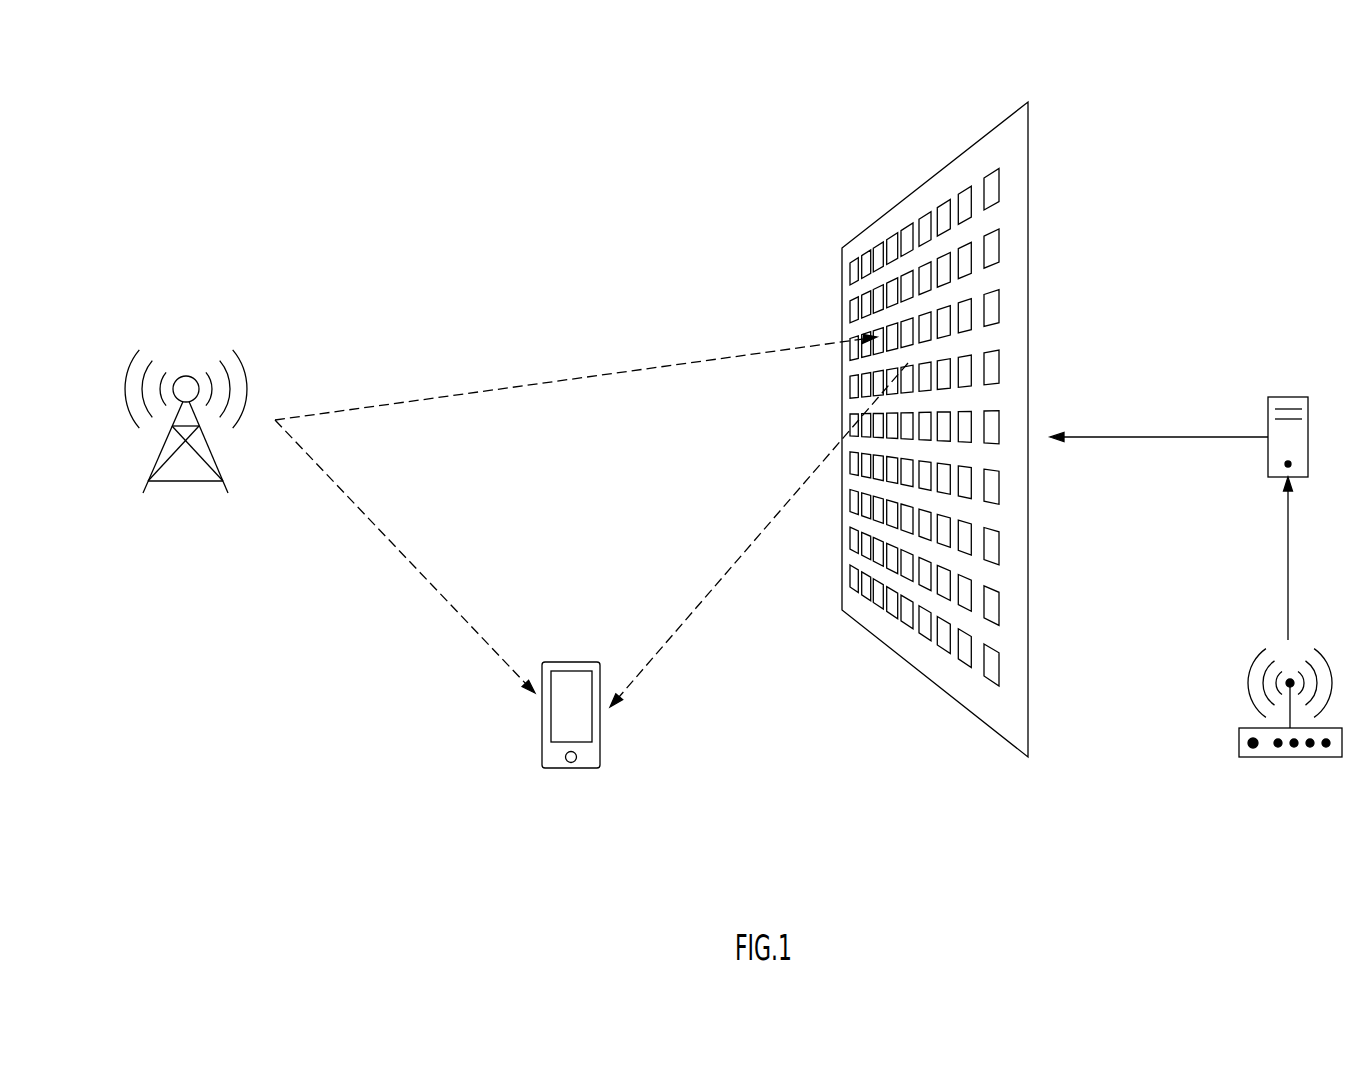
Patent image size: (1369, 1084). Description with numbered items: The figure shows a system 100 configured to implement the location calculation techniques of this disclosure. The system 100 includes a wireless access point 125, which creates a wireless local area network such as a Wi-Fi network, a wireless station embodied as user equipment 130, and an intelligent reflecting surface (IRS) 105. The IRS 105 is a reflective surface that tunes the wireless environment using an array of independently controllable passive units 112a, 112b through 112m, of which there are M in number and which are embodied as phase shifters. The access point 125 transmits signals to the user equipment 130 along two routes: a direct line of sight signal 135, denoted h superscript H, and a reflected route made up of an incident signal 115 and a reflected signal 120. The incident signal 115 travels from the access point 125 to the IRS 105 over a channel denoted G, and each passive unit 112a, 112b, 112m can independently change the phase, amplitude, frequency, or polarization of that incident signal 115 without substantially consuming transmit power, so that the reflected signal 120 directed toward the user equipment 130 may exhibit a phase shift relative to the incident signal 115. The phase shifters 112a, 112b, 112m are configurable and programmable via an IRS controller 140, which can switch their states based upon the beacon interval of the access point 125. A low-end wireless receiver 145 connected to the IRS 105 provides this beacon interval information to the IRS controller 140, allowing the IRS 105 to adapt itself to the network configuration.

The system 100 is at (76, 67).
The intelligent reflecting surface (IRS) 105 is at (1028, 193).
The passive unit 112a is at (855, 272).
The passive unit 112b is at (863, 265).
The passive unit 112m is at (992, 660).
The incident signal 115 is at (452, 395).
The reflected signal 120 is at (698, 607).
The wireless access point 125 is at (122, 391).
The user equipment 130 is at (600, 739).
The direct line of sight signal 135 is at (433, 589).
The IRS controller 140 is at (1309, 451).
The low-end wireless receiver 145 is at (1297, 758).